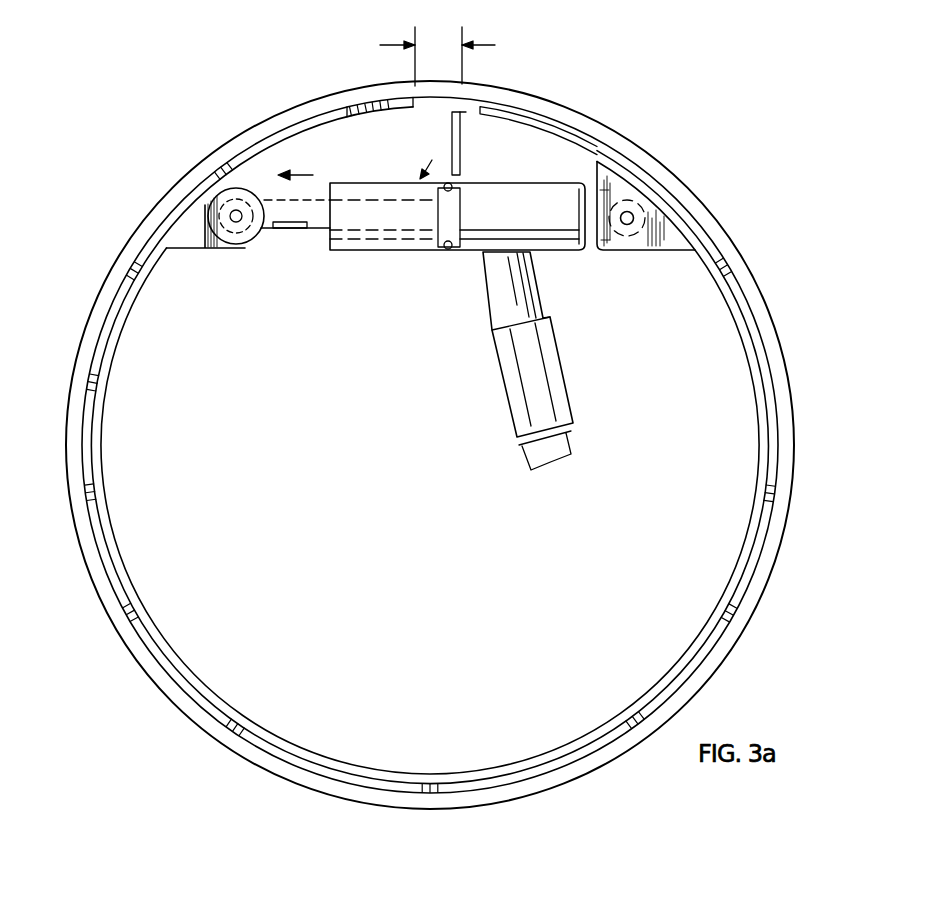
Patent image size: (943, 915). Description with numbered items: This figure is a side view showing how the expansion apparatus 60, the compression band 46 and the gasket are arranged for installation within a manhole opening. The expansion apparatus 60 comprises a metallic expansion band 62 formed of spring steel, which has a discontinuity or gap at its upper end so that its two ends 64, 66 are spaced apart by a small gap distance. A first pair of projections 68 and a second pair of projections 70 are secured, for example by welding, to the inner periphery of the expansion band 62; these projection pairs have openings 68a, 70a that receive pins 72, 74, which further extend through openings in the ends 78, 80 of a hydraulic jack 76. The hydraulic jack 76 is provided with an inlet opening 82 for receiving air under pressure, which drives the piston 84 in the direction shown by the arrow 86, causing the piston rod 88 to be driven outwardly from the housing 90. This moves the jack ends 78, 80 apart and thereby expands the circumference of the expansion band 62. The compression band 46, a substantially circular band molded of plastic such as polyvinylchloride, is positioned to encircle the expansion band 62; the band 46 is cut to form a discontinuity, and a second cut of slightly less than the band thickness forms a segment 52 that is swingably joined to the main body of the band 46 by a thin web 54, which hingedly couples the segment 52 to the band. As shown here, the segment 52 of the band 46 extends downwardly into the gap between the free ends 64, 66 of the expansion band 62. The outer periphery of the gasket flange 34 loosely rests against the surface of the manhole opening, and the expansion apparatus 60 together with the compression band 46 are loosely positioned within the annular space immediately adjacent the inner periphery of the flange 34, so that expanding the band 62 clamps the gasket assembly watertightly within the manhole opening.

The flange 34 is at (82, 550).
The compression band 46 is at (106, 500).
The segment 52 is at (462, 164).
The thin web 54 is at (452, 110).
The expansion apparatus 60 is at (152, 138).
The expansion band 62 is at (102, 447).
The end of expansion band 64 is at (407, 112).
The end of expansion band 66 is at (481, 116).
The first pair of projections 68 is at (648, 251).
The opening 68a is at (626, 226).
The second pair of projections 70 is at (236, 188).
The opening 70a is at (229, 213).
The pin 72 is at (633, 213).
The pin 74 is at (217, 248).
The hydraulic jack 76 is at (434, 157).
The end of hydraulic jack 78 is at (584, 188).
The end of hydraulic jack 80 is at (233, 230).
The inlet opening 82 is at (503, 307).
The piston 84 is at (439, 218).
The arrow 86 is at (313, 175).
The piston rod 88 is at (303, 229).
The housing 90 is at (350, 183).